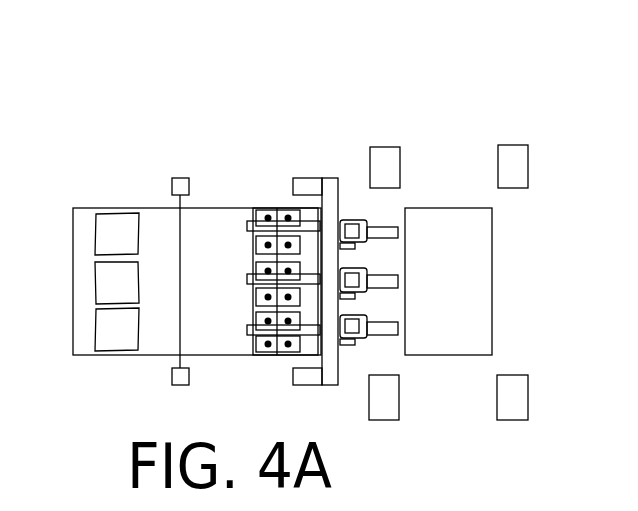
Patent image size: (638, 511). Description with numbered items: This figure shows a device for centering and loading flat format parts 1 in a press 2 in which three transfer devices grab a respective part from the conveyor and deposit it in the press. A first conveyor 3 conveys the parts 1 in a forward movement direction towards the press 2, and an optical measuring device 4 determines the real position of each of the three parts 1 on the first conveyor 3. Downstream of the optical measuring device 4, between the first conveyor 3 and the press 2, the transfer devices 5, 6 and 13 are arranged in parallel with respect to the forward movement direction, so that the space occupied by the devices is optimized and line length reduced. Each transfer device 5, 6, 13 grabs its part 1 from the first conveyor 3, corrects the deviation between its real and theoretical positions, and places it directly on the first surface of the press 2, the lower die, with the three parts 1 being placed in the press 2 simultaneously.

The parts 1 is at (254, 330).
The press 2 is at (472, 277).
The first conveyor 3 is at (203, 300).
The optical measuring device 4 is at (172, 186).
The transfer device 5 is at (352, 230).
The transfer device 6 is at (353, 280).
The transfer device 13 is at (347, 327).